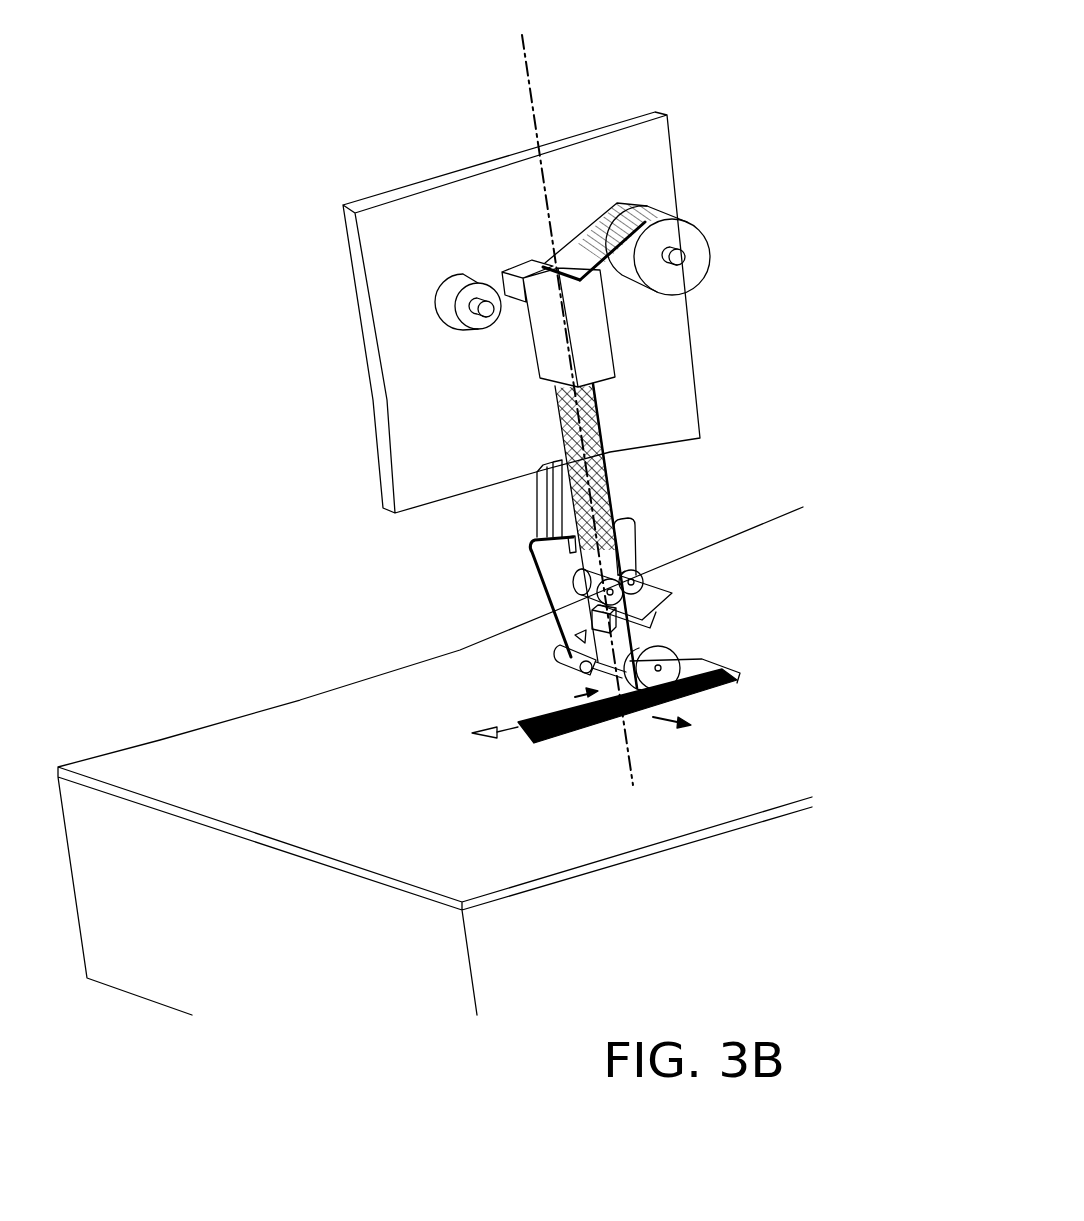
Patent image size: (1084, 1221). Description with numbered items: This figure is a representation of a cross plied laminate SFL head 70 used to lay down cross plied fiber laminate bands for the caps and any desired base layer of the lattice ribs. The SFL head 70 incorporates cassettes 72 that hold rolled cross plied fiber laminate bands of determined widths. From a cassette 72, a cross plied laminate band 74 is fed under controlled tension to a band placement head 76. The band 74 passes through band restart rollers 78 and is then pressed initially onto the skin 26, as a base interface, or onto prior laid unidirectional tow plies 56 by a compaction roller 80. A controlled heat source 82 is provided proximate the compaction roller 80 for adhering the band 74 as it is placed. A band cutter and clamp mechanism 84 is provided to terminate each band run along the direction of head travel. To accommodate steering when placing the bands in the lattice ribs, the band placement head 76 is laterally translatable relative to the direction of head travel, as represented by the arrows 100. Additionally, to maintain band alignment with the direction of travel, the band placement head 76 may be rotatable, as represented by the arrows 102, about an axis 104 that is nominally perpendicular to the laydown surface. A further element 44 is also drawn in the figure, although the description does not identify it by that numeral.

The cross plied laminate SFL head 70 is at (735, 112).
The cassette 72 is at (690, 228).
The cross plied laminate band 74 is at (616, 495).
The band placement head 76 is at (536, 552).
The band restart rollers 78 is at (580, 580).
The sensor 44 is at (560, 647).
The band cutter and clamp mechanism 84 is at (625, 605).
The compaction roller 80 is at (660, 667).
The skin 26 is at (812, 708).
The rotation arrows 102 is at (577, 697).
The controlled heat source 82 is at (510, 730).
The first plurality of unidirectional tow plies 56 is at (530, 742).
The axis 104 is at (630, 782).
The lateral translation arrows 100 is at (660, 727).